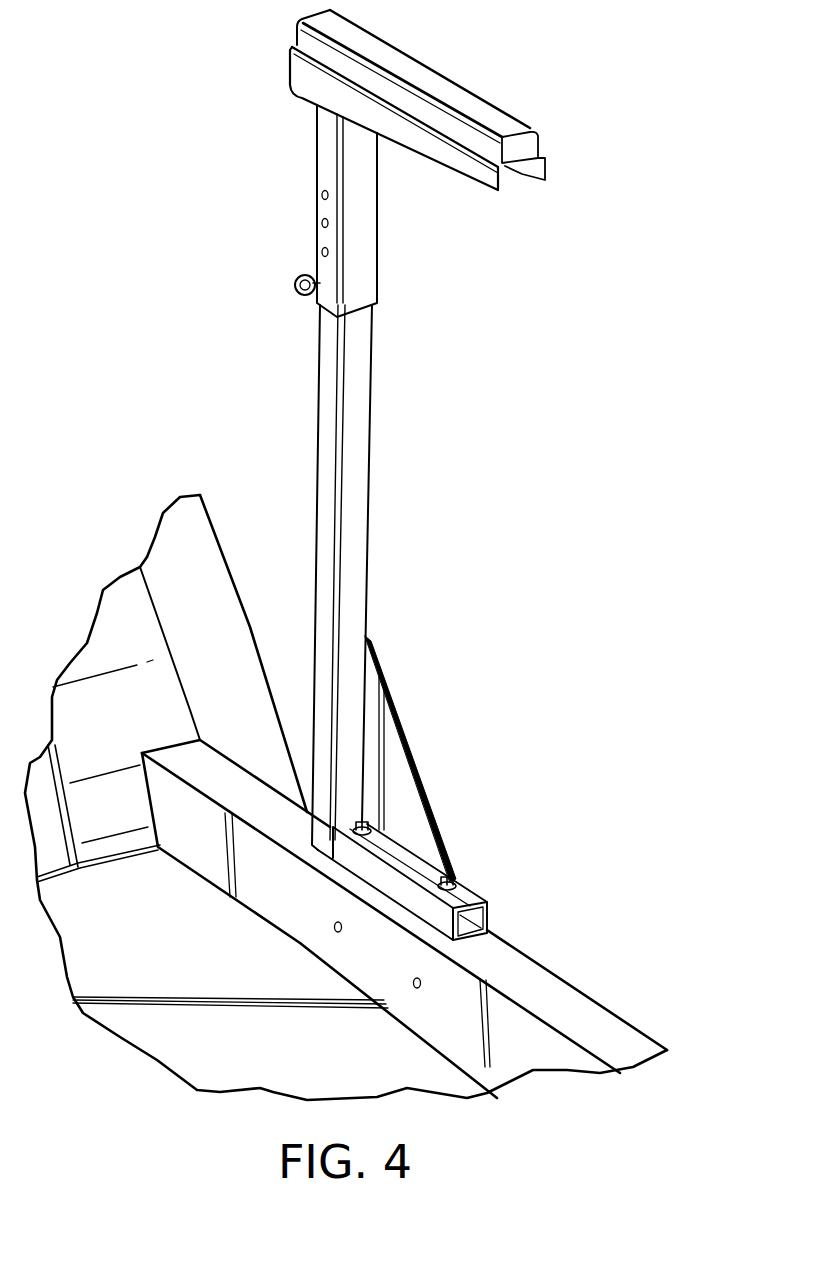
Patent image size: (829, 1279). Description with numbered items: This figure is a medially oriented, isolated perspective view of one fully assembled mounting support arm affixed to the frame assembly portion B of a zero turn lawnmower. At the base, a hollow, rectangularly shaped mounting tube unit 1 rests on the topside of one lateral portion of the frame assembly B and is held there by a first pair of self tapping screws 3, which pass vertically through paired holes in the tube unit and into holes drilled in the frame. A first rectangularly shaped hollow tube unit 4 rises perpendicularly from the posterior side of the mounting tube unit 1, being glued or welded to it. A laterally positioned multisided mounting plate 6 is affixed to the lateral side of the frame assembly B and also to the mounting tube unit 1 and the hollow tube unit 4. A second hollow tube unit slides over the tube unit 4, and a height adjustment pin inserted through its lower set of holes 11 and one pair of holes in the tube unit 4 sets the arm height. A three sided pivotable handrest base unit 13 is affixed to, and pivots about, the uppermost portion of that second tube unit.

The mounting tube unit 1 is at (415, 867).
The first pair of self tapping screws 3 is at (380, 783).
The first rectangularly shaped hollow tube unit 4 is at (338, 447).
The multisided mounting plate 6 is at (400, 710).
The lower set of holes 11 is at (317, 195).
The three sided pivotable handrest base unit 13 is at (390, 123).
The frame assembly portion B is at (523, 980).